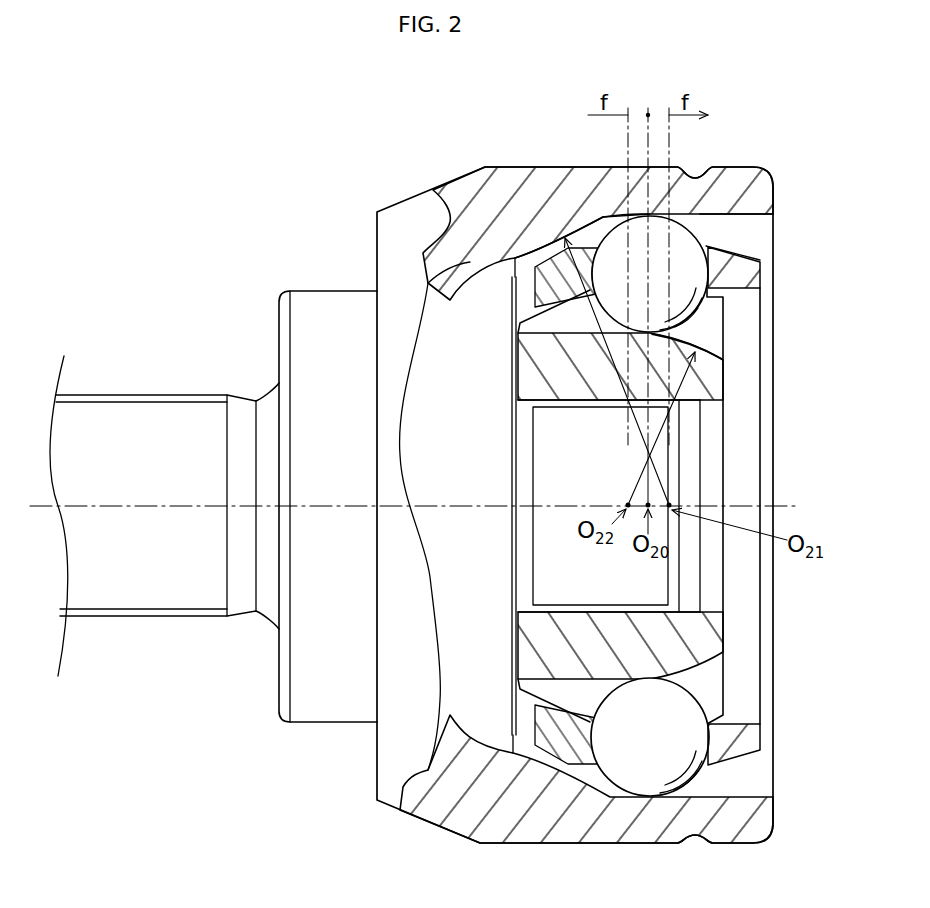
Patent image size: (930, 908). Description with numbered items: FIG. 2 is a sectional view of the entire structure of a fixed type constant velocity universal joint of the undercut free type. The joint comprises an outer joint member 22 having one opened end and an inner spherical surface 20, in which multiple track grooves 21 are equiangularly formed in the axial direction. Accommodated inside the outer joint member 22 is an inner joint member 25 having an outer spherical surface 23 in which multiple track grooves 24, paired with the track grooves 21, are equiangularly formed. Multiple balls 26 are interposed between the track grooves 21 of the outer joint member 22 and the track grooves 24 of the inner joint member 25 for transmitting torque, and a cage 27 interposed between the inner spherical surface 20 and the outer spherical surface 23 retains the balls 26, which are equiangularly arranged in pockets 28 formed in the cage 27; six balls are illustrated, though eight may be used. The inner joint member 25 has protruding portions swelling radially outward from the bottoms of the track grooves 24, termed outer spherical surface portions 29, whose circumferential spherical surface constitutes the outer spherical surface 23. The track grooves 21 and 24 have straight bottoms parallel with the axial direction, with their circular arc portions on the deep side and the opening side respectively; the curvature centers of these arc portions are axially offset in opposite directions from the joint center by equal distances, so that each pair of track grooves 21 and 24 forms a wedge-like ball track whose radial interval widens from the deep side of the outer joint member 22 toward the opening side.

The inner spherical surface 20 is at (553, 272).
The track grooves 21 is at (714, 224).
The outer joint member 22 is at (468, 815).
The outer spherical surface 23 is at (556, 717).
The track grooves 24 is at (710, 349).
The inner joint member 25 is at (556, 365).
The balls 26 is at (622, 243).
The cage 27 is at (712, 268).
The pockets 28 is at (713, 247).
The outer spherical surface portions 29 is at (708, 316).